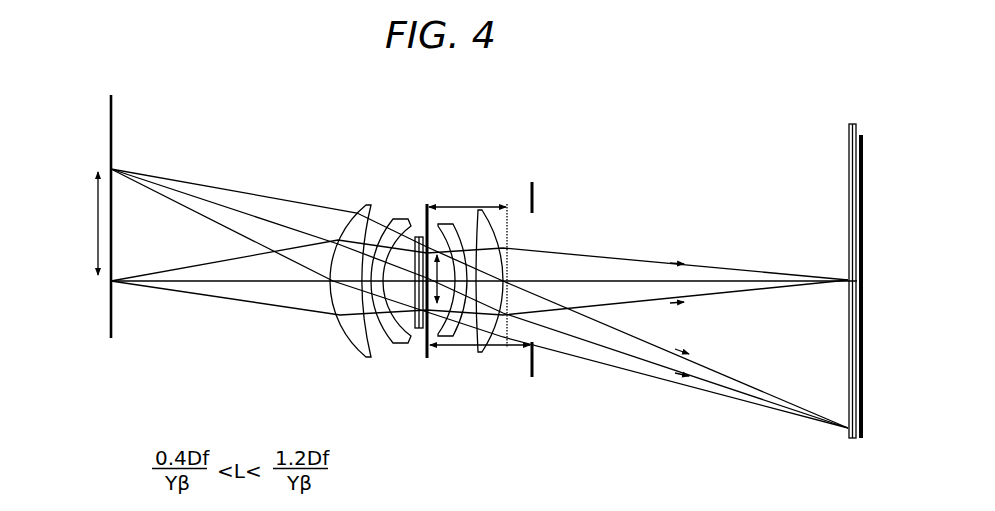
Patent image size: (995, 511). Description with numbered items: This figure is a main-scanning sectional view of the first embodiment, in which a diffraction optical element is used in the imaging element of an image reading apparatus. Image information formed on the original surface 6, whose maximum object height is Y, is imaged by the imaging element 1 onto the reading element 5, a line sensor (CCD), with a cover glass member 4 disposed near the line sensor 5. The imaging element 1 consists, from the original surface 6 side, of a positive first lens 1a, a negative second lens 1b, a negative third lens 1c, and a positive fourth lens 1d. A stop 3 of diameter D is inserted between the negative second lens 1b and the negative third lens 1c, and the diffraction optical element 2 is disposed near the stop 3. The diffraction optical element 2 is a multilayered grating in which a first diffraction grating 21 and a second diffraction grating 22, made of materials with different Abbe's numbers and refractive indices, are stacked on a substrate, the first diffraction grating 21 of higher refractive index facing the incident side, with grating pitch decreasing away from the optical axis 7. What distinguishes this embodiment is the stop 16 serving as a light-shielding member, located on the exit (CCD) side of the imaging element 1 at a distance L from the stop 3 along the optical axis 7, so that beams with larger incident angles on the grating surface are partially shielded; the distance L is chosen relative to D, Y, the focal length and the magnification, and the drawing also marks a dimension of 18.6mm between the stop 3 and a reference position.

The imaging element 1 is at (512, 135).
The positive first lens 1a is at (368, 204).
The negative second lens 1b is at (402, 218).
The negative third lens 1c is at (447, 223).
The positive fourth lens 1d is at (478, 209).
The diffraction optical element 2 is at (462, 398).
The first diffraction grating 21 is at (416, 330).
The second diffraction grating 22 is at (427, 359).
The stop 3 is at (433, 357).
The cover glass member 4 is at (848, 146).
The reading element 5 is at (861, 138).
The original surface 6 is at (113, 316).
The optical axis 7 is at (272, 283).
The stop serving as light-shielding member 16 is at (535, 196).
The lens length dimension 18.6mm is at (497, 206).
The distance L is at (497, 350).
The diameter of the stop D is at (347, 329).
The maximum object height Y is at (87, 223).